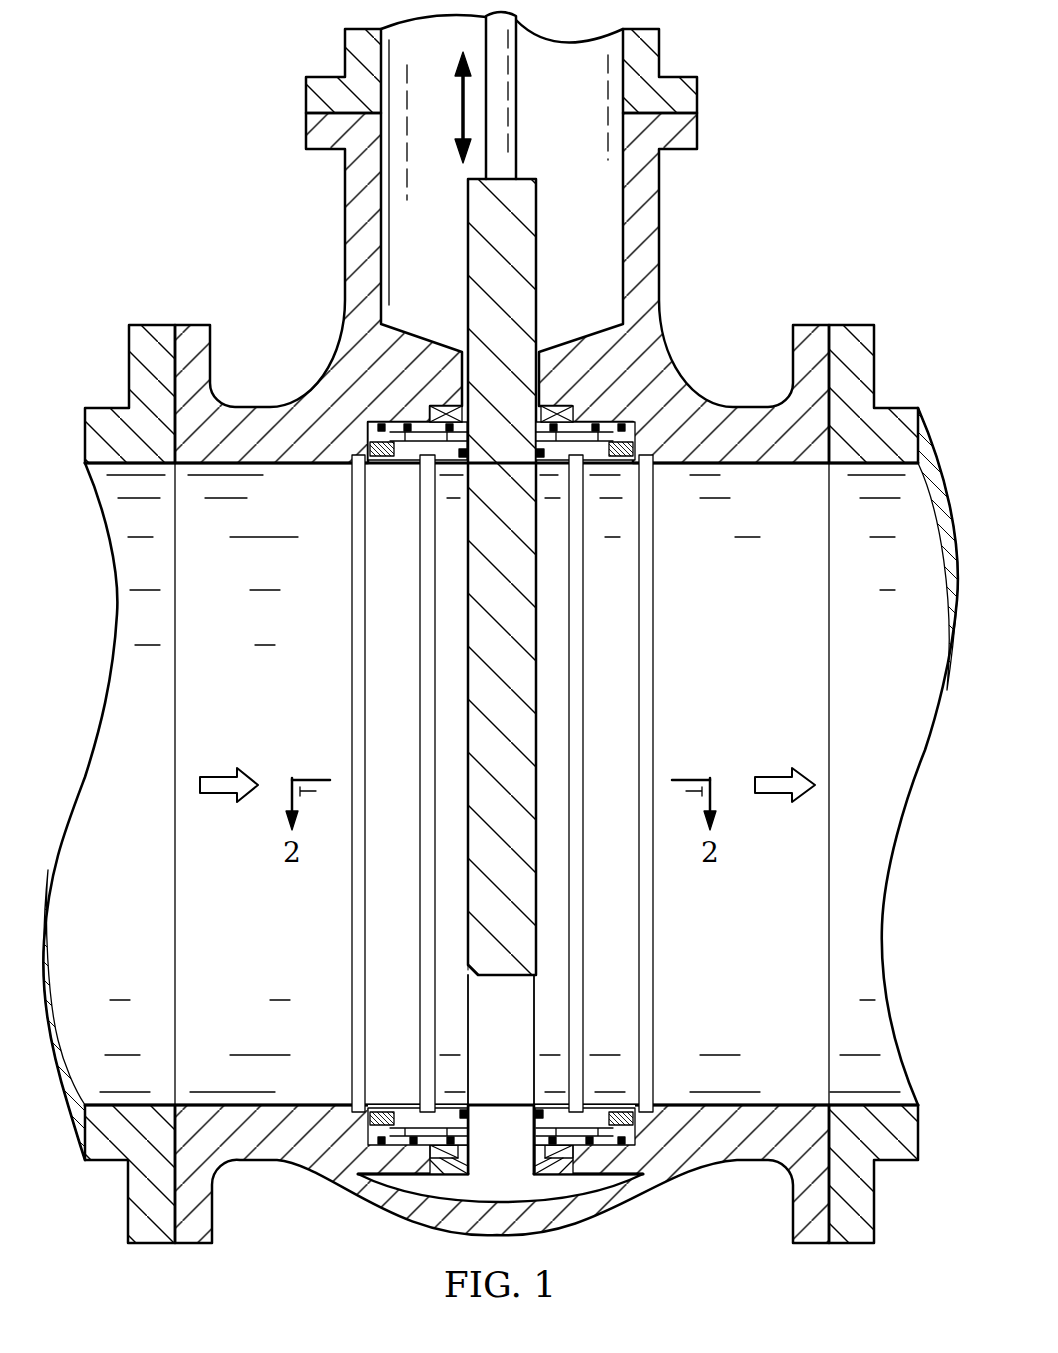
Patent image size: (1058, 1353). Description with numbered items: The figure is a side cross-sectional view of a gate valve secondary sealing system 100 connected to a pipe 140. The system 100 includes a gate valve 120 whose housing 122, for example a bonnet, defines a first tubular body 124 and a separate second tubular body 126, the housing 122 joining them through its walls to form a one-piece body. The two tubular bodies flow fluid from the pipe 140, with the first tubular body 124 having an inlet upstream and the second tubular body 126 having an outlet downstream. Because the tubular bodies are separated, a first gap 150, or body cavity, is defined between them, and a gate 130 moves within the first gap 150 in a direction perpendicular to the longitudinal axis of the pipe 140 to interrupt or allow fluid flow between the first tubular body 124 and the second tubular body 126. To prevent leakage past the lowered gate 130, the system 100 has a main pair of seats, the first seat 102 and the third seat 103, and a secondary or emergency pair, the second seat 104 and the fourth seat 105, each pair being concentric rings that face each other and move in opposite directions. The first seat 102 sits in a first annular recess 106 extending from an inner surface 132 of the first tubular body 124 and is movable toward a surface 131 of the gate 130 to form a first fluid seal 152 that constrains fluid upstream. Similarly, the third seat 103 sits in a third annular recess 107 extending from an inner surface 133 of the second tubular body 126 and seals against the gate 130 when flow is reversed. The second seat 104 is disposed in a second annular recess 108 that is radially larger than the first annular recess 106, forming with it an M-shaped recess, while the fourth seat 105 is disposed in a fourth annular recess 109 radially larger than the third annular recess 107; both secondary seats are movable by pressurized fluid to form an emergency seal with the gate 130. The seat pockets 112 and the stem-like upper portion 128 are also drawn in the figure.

The gate valve secondary sealing system 100 is at (718, 281).
The first seat 102 is at (398, 466).
The third seat 103 is at (630, 425).
The second seat 104 is at (440, 412).
The fourth seat 105 is at (580, 405).
The first annular recess 106 is at (372, 438).
The third annular recess 107 is at (640, 428).
The second annular recess 108 is at (440, 405).
The fourth annular recess 109 is at (530, 405).
The seat pocket 112 is at (640, 452).
The gate valve 120 is at (664, 40).
The housing 122 is at (660, 210).
The first tubular body 124 is at (288, 466).
The second tubular body 126 is at (760, 466).
The gate 128 is at (537, 885).
The gate 130 is at (524, 192).
The surface of the gate 131 is at (468, 250).
The inner surface of the first tubular body 132 is at (332, 466).
The inner surface of the second tubular body 133 is at (805, 466).
The pipe 140 is at (102, 405).
The first gap 150 is at (490, 1035).
The first fluid seal 152 is at (472, 450).